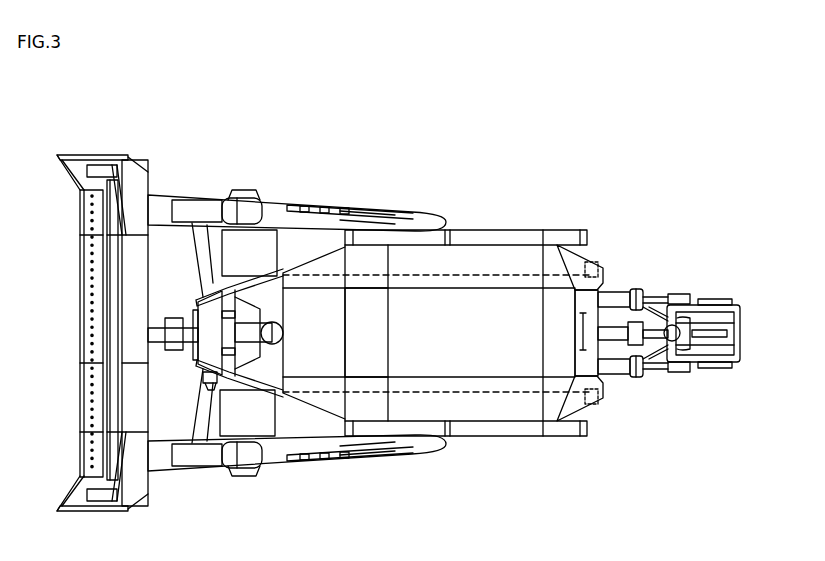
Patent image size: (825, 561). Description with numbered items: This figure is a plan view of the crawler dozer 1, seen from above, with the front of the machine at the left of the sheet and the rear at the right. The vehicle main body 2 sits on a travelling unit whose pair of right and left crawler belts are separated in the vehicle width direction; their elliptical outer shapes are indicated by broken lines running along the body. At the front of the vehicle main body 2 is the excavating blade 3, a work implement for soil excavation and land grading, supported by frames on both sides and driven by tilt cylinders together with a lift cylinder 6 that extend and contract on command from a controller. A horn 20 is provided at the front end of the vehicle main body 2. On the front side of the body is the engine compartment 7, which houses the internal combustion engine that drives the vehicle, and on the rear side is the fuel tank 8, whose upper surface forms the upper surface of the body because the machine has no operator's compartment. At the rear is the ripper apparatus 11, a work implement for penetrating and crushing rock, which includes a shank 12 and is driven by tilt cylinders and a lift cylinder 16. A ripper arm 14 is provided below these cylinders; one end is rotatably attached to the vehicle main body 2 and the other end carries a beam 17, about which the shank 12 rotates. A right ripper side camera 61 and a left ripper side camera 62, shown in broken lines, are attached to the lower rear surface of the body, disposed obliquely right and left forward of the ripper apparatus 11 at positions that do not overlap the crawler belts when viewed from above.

The crawler dozer 1 is at (541, 134).
The vehicle main body 2 is at (467, 300).
The excavating blade 3 is at (85, 288).
The lift cylinder 6 is at (253, 330).
The engine compartment 7 is at (370, 330).
The fuel tank 8 is at (575, 262).
The ripper apparatus 11 is at (742, 283).
The shank 12 is at (712, 334).
The ripper arm 14 is at (649, 345).
The lift cylinder 16 is at (610, 338).
The beam 17 is at (715, 303).
The horn 20 is at (207, 378).
The right ripper side camera 61 is at (592, 263).
The left ripper side camera 62 is at (592, 403).